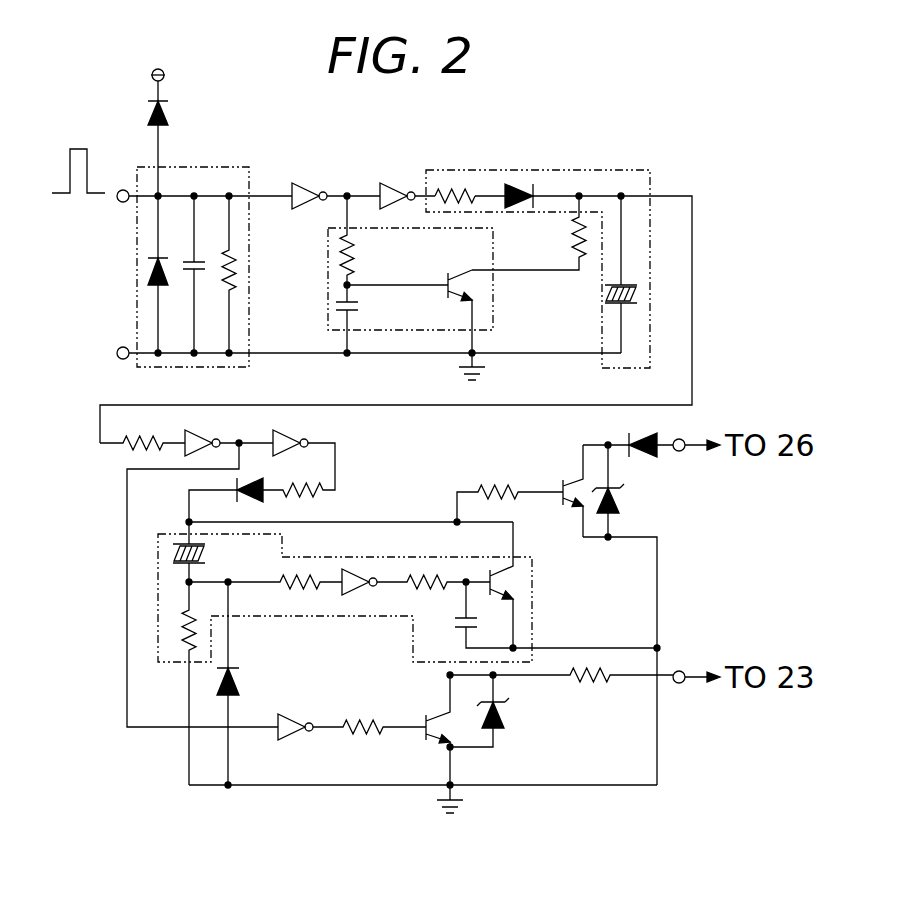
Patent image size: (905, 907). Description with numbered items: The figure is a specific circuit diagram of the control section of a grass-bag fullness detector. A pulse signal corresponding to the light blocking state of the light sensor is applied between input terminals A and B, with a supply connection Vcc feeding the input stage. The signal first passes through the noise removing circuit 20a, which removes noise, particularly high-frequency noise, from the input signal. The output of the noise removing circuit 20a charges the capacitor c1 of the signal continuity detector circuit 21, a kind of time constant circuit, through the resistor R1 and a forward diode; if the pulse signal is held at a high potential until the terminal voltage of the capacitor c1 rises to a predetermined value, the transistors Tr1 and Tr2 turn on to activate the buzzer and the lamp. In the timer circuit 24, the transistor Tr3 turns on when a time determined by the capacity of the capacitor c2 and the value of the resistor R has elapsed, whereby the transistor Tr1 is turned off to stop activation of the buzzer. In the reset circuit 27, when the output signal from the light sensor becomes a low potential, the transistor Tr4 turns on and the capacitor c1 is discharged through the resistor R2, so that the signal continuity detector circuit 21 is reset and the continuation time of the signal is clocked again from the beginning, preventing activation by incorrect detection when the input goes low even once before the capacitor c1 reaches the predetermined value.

The noise removing circuit 20a is at (205, 166).
The signal continuity detector circuit 21 is at (556, 247).
The reset circuit 27 is at (385, 276).
The timer circuit 24 is at (312, 616).
The resistor R1 is at (463, 188).
The resistor R2 is at (565, 232).
The resistor R is at (178, 624).
The capacitor C1 c1 is at (641, 294).
The capacitor C2 c2 is at (203, 560).
The transistor Tr1 is at (560, 480).
The transistor Tr2 is at (434, 712).
The transistor Tr3 is at (505, 582).
The transistor Tr4 is at (455, 270).
The input terminal A is at (118, 201).
The input terminal B is at (118, 358).
The supply voltage terminal Vcc is at (184, 130).